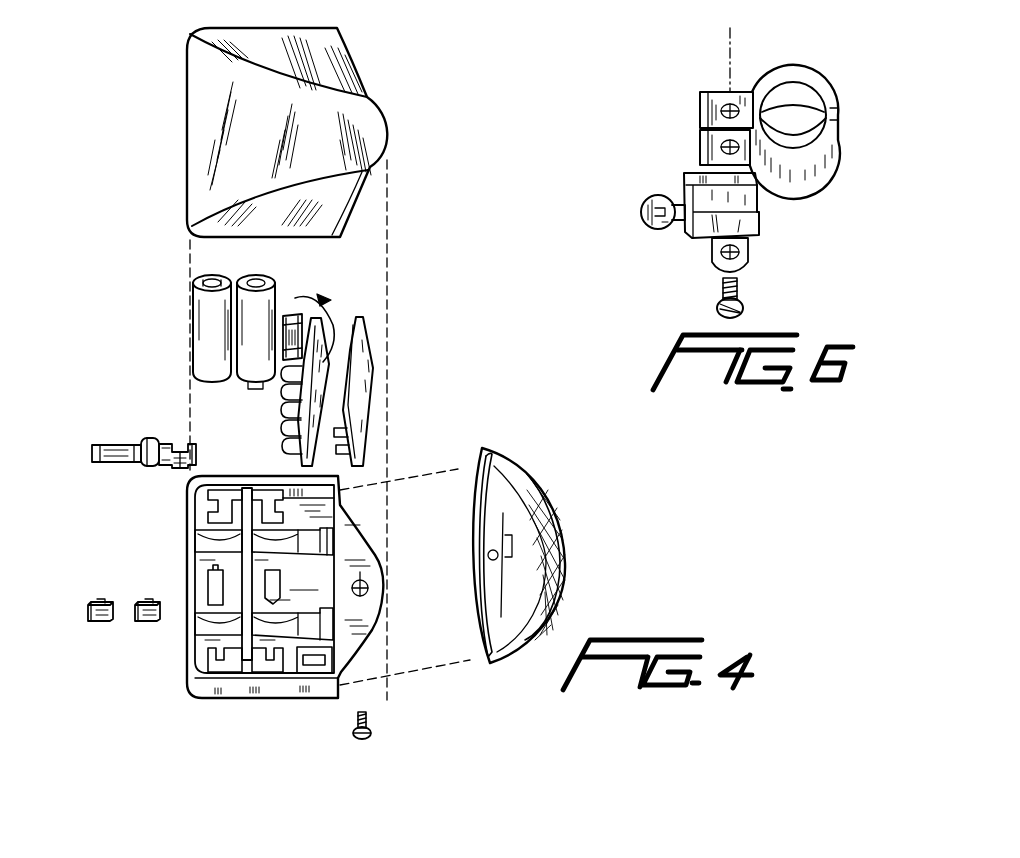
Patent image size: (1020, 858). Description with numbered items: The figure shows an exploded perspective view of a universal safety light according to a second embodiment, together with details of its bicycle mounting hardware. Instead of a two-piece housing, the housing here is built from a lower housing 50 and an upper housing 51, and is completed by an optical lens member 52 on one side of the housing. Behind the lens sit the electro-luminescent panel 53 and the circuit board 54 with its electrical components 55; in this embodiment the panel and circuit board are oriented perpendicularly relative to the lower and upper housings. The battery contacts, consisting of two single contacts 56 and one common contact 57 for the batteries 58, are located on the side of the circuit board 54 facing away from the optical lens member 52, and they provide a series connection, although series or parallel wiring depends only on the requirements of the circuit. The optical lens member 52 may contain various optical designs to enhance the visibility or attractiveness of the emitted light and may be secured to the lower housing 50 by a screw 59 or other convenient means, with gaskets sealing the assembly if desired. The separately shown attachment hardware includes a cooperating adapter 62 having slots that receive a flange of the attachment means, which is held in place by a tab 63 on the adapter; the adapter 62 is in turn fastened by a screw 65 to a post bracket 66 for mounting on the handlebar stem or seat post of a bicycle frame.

In FIG. 4, the lower housing 50 is at (200, 563).
In FIG. 4, the upper housing 51 is at (372, 108).
In FIG. 4, the optical lens member 52 is at (517, 566).
In FIG. 4, the electro-luminescent panel 53 is at (369, 372).
In FIG. 4, the circuit board 54 is at (327, 362).
In FIG. 4, the electrical components 55 is at (238, 407).
In FIG. 4, the single contacts 56 is at (140, 622).
In FIG. 4, the common contact 57 is at (143, 466).
In FIG. 4, the batteries 58 is at (247, 309).
In FIG. 4, the screw 59 is at (370, 727).
In FIG. 6, the adapter 62 is at (740, 205).
In FIG. 6, the tab 63 is at (650, 212).
In FIG. 6, the screw 65 is at (737, 302).
In FIG. 6, the post bracket 66 is at (833, 128).